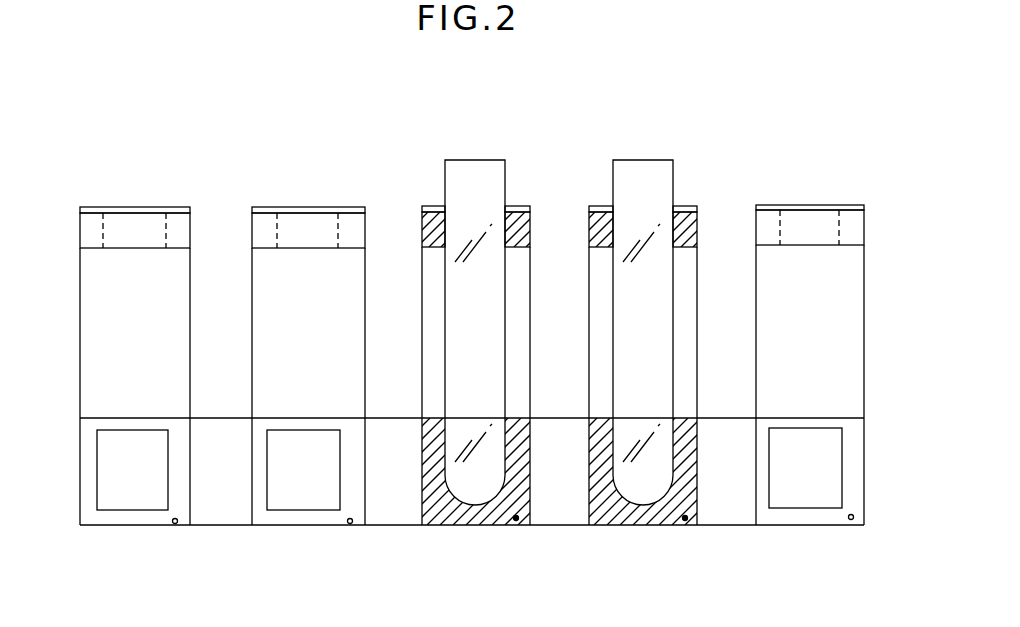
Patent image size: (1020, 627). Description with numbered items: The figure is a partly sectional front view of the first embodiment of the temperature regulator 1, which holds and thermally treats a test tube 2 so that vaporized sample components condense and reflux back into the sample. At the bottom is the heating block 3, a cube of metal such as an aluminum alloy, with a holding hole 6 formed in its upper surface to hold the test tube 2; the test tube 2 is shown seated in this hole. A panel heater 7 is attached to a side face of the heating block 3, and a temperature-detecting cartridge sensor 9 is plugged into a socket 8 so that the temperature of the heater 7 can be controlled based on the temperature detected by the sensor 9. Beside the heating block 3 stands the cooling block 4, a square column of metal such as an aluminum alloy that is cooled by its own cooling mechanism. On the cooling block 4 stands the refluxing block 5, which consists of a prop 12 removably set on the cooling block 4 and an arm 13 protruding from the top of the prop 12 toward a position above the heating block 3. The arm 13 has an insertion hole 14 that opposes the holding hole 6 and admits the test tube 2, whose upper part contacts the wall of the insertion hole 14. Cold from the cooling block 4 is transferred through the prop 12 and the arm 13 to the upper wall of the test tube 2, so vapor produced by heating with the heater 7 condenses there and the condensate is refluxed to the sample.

The temperature regulator 1 is at (462, 128).
The test tube 2 is at (455, 183).
The heating block 3 is at (90, 492).
The cooling block 4 is at (223, 418).
The refluxing block 5 is at (161, 206).
The holding hole 6 is at (450, 437).
The panel heater 7 is at (108, 453).
The socket 8 is at (516, 525).
The temperature-detecting cartridge sensor 9 is at (175, 527).
The prop 12 is at (86, 325).
The arm 13 is at (88, 229).
The insertion hole 14 is at (106, 230).